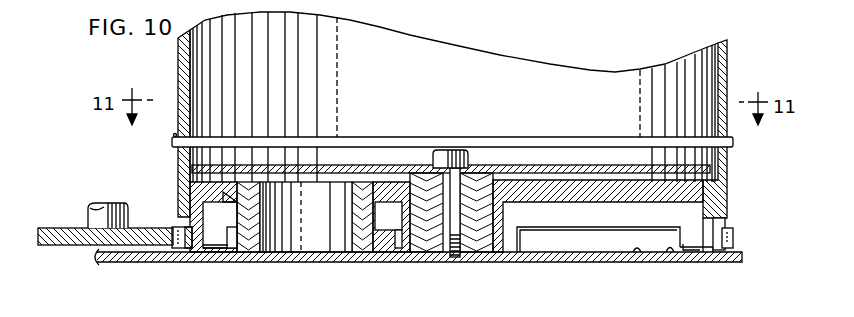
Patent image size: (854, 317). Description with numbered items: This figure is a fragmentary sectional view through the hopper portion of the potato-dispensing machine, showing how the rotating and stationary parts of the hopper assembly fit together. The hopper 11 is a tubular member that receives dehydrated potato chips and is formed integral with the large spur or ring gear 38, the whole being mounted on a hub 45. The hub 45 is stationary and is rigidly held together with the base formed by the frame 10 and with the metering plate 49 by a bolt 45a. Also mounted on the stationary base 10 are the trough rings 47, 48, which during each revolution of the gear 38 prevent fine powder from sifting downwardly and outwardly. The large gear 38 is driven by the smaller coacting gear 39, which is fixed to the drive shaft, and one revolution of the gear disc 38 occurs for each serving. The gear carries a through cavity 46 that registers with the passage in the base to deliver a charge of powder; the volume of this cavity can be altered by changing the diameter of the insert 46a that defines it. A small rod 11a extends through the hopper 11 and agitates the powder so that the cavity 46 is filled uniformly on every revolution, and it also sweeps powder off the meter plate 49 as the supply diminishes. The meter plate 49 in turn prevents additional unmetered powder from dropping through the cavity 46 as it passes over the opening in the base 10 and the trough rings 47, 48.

The frame 10 is at (133, 262).
The hopper 11 is at (180, 69).
The rod 11a is at (386, 138).
The spur gear 38 is at (733, 236).
The coacting gear 39 is at (67, 227).
The hub 45 is at (427, 258).
The bolt 45a is at (467, 150).
The through cavity 46 is at (316, 225).
The insert 46a is at (360, 252).
The trough ring 47 is at (637, 251).
The trough ring 48 is at (670, 251).
The metering plate 49 is at (697, 164).